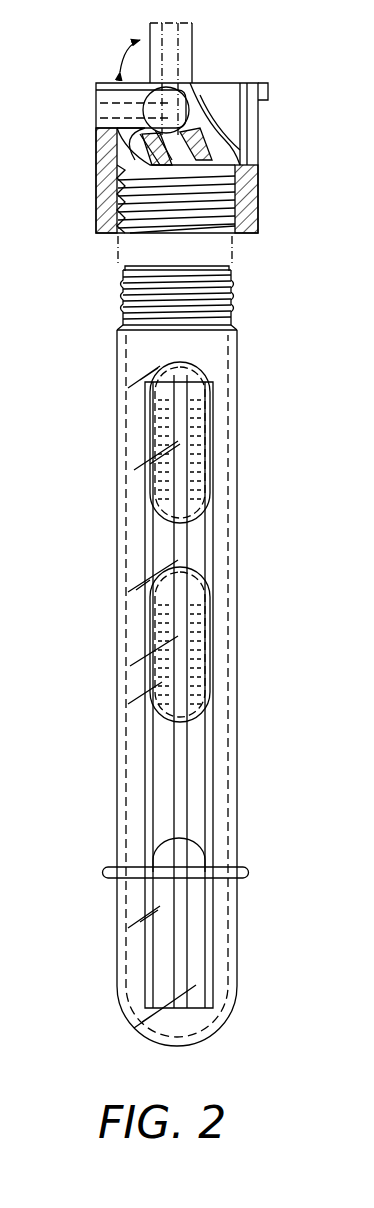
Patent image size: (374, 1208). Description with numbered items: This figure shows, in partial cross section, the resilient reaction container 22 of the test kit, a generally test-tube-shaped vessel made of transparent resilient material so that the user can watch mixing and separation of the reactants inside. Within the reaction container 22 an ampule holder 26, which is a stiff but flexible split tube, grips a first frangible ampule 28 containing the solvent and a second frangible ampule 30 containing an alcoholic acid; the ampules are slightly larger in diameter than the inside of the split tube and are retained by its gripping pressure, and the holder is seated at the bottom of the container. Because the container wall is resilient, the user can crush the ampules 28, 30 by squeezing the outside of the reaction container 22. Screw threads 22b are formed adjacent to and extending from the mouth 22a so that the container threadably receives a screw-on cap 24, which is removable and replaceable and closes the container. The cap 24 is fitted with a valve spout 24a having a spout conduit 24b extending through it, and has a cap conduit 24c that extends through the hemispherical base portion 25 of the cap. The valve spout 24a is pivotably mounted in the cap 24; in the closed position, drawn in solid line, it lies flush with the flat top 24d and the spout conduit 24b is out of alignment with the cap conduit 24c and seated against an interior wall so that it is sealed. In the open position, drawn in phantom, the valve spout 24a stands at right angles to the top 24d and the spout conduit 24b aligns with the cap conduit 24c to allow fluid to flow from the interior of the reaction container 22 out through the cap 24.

The reaction container 22 is at (110, 607).
The mouth 22a is at (207, 272).
The screw threads 22b is at (122, 303).
The screw-on cap 24 is at (245, 128).
The valve spout 24a is at (106, 82).
The spout conduit 24b is at (96, 105).
The cap conduit 24c is at (100, 176).
The flat top 24d is at (241, 83).
The hemispherical base portion 25 is at (228, 173).
The ampule holder 26 is at (160, 527).
The first frangible ampule 28 is at (176, 664).
The second frangible ampule 30 is at (178, 414).